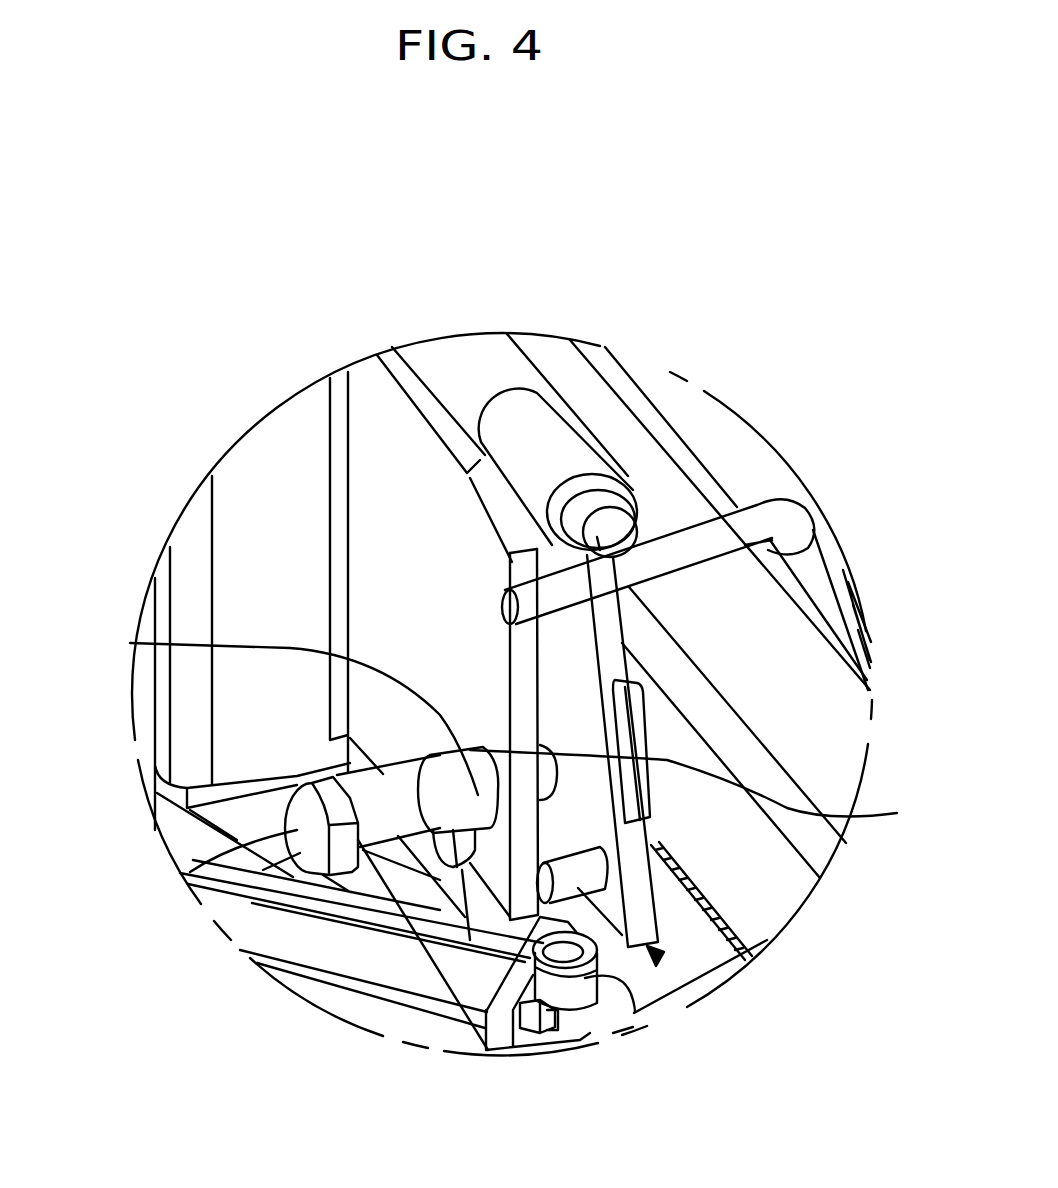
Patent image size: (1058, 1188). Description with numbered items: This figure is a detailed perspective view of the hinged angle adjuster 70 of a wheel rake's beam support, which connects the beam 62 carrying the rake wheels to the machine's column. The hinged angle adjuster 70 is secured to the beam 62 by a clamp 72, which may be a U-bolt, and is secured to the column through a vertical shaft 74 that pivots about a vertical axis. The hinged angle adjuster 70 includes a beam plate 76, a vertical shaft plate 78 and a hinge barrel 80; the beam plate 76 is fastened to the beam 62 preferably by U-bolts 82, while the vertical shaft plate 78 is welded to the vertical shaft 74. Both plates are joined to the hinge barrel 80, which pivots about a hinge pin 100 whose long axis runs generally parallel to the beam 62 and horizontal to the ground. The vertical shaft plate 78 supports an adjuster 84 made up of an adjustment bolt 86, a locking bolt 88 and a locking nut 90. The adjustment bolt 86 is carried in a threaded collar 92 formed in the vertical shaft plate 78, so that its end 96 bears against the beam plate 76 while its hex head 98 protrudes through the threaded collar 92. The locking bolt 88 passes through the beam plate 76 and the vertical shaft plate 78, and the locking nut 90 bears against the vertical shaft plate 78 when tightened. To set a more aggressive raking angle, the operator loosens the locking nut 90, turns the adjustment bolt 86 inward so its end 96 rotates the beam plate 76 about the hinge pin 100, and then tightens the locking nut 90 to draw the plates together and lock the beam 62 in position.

The beam 62 is at (830, 688).
The hinged angle adjuster 70 is at (663, 960).
The clamp 72 is at (807, 563).
The vertical shaft 74 is at (277, 467).
The beam plate 76 is at (627, 842).
The vertical shaft plate 78 is at (383, 433).
The hinge barrel 80 is at (477, 357).
The U-bolts 82 is at (800, 522).
The adjuster 84 is at (190, 872).
The adjustment bolt 86 is at (487, 1053).
The locking bolt 88 is at (543, 810).
The locking nut 90 is at (660, 1012).
The threaded collar 92 is at (285, 710).
The end 96 is at (701, 790).
The hex head 98 is at (300, 805).
The hinge pin 100 is at (597, 540).